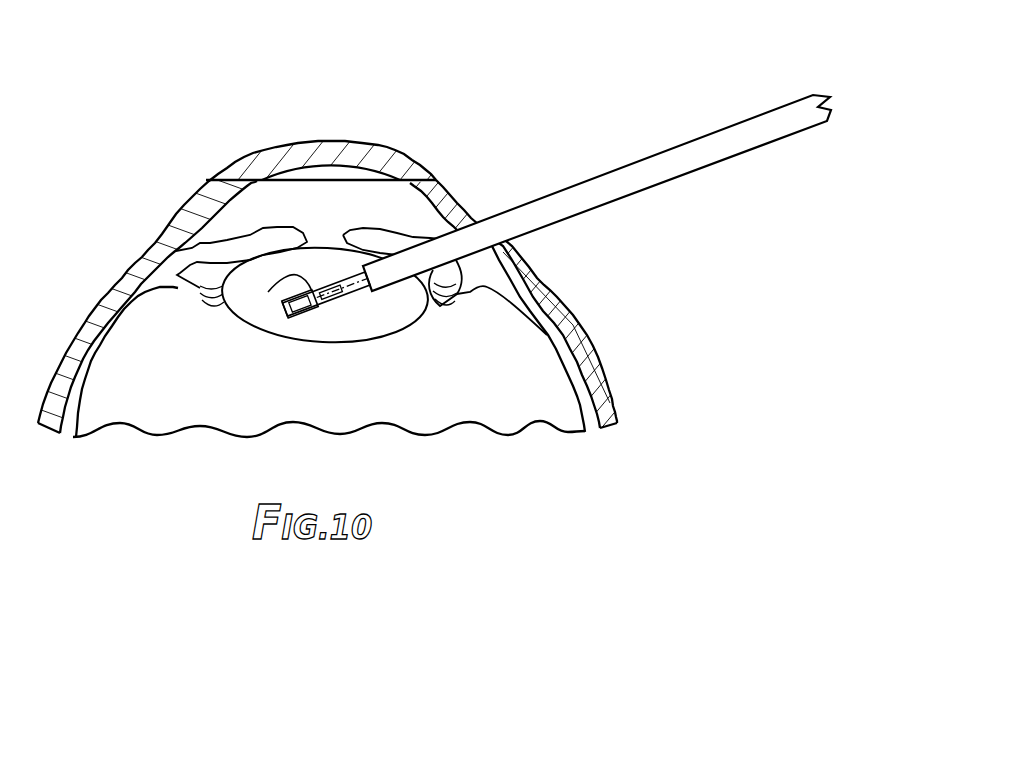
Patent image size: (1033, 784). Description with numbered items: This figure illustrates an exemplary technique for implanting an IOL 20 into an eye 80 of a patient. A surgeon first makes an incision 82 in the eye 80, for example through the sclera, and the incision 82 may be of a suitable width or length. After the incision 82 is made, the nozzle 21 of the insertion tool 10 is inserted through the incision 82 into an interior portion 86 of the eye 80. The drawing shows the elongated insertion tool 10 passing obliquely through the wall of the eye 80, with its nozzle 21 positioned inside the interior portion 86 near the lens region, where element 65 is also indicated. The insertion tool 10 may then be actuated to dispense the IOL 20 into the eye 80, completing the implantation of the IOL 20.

The insertion tool 10 is at (691, 139).
The IOL 20 is at (268, 292).
The nozzle 21 is at (380, 303).
The lens 65 is at (332, 349).
The eye 80 is at (244, 128).
The incision 82 is at (500, 245).
The interior portion 86 is at (413, 307).